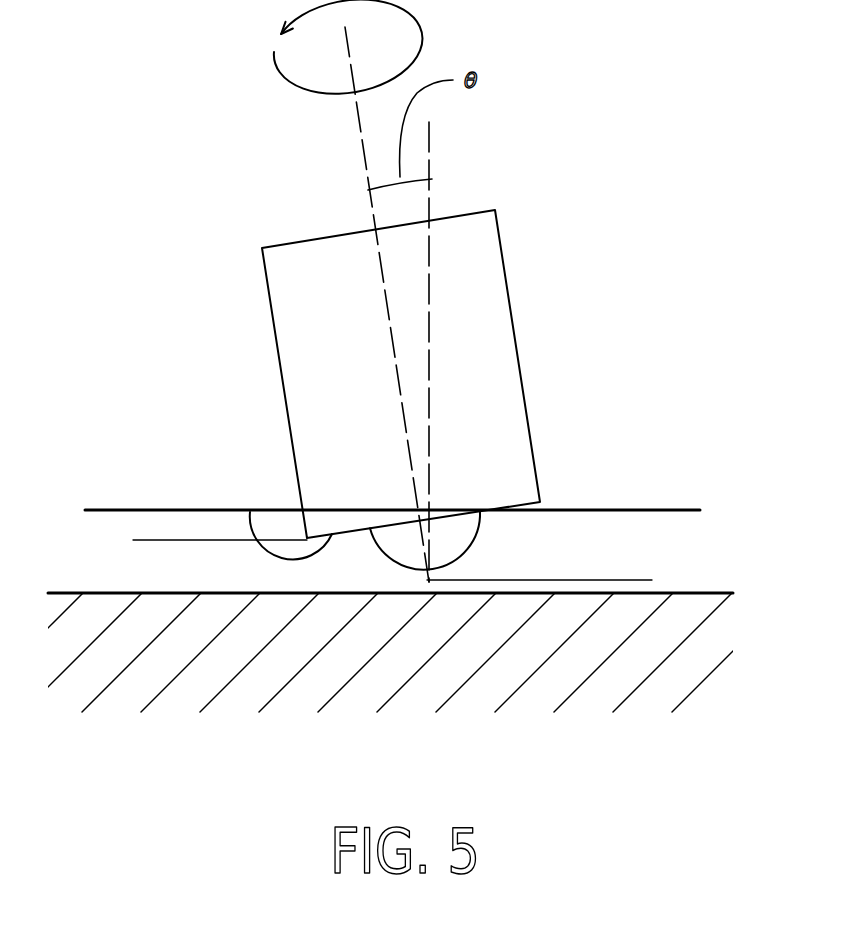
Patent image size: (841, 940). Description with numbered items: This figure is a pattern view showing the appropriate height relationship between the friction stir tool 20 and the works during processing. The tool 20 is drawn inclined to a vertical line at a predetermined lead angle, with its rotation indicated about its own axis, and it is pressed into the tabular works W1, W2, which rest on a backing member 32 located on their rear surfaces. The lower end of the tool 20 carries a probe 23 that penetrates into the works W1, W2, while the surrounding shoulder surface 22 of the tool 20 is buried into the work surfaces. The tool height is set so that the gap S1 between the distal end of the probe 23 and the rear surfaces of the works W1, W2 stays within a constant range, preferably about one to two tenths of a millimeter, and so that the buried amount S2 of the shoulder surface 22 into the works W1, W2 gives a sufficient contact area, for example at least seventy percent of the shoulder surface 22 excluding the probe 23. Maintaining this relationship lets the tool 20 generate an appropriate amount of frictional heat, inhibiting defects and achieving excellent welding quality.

The tool 20 is at (511, 314).
The shoulder surface 22 is at (250, 512).
The probe 23 is at (463, 547).
The backing member 32 is at (398, 665).
The work W1 is at (372, 456).
The work W2 is at (118, 510).
The gap S1 is at (633, 630).
The buried amount S2 is at (165, 580).